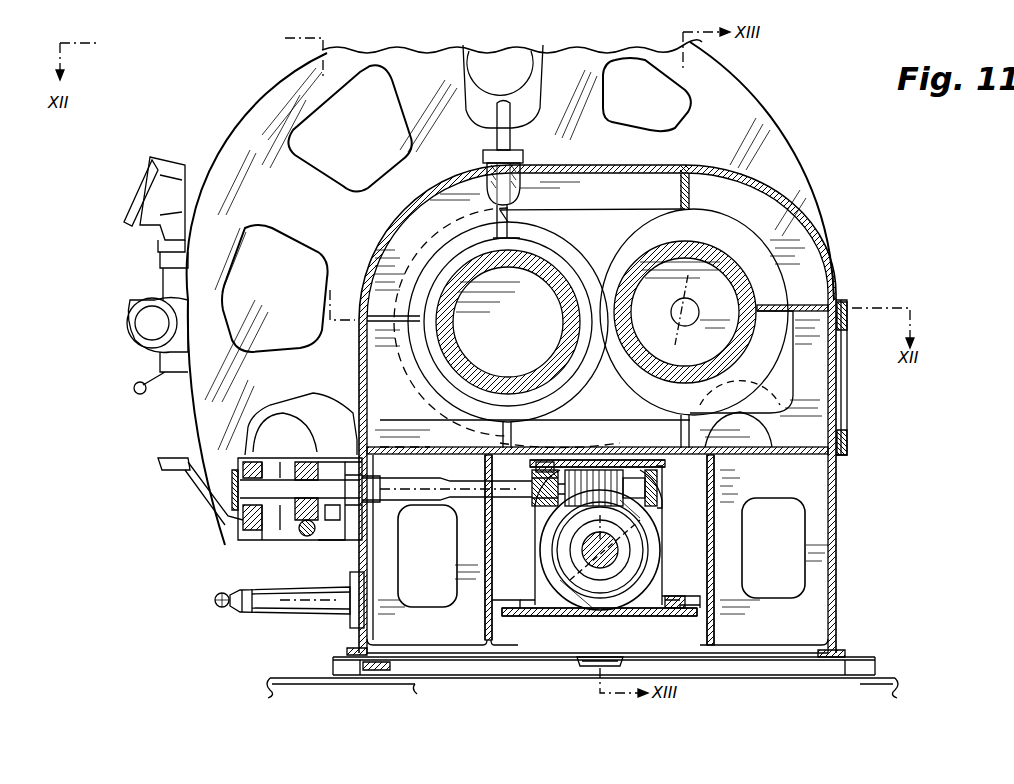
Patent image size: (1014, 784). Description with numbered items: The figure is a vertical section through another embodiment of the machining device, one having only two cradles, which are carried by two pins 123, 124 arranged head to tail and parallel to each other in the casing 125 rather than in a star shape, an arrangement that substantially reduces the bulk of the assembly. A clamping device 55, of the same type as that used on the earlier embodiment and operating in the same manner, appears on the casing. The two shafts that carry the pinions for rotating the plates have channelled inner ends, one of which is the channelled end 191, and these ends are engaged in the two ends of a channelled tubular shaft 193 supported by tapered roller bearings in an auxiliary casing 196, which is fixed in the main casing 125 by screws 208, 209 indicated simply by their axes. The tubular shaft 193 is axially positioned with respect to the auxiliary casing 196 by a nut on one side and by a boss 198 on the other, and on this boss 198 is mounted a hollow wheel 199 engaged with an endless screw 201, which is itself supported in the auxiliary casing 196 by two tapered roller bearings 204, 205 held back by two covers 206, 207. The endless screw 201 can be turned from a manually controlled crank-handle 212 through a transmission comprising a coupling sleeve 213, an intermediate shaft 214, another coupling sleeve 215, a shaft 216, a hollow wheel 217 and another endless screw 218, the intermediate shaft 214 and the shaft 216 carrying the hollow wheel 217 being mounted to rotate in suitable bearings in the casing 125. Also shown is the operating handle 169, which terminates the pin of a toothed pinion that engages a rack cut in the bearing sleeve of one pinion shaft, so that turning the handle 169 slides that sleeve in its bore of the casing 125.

The clamping device 55 is at (548, 62).
The pin 123 is at (455, 345).
The pin 124 is at (640, 312).
The casing 125 is at (232, 124).
The operating handle 169 is at (214, 600).
The channelled inner end 191 is at (590, 545).
The channelled tubular shaft 193 is at (618, 558).
The auxiliary casing 196 is at (655, 540).
The boss 198 is at (578, 580).
The hollow wheel 199 is at (650, 562).
The endless screw 201 is at (605, 470).
The tapered roller bearing 204 is at (555, 462).
The tapered roller bearing 205 is at (655, 468).
The cover 206 is at (533, 470).
The cover 207 is at (660, 490).
The screw 208 is at (515, 630).
The screw 209 is at (690, 618).
The crank-handle 212 is at (158, 464).
The coupling sleeve 213 is at (512, 500).
The intermediate shaft 214 is at (430, 495).
The coupling sleeve 215 is at (431, 547).
The shaft 216 is at (272, 466).
The hollow wheel 217 is at (306, 470).
The endless screw 218 is at (307, 538).